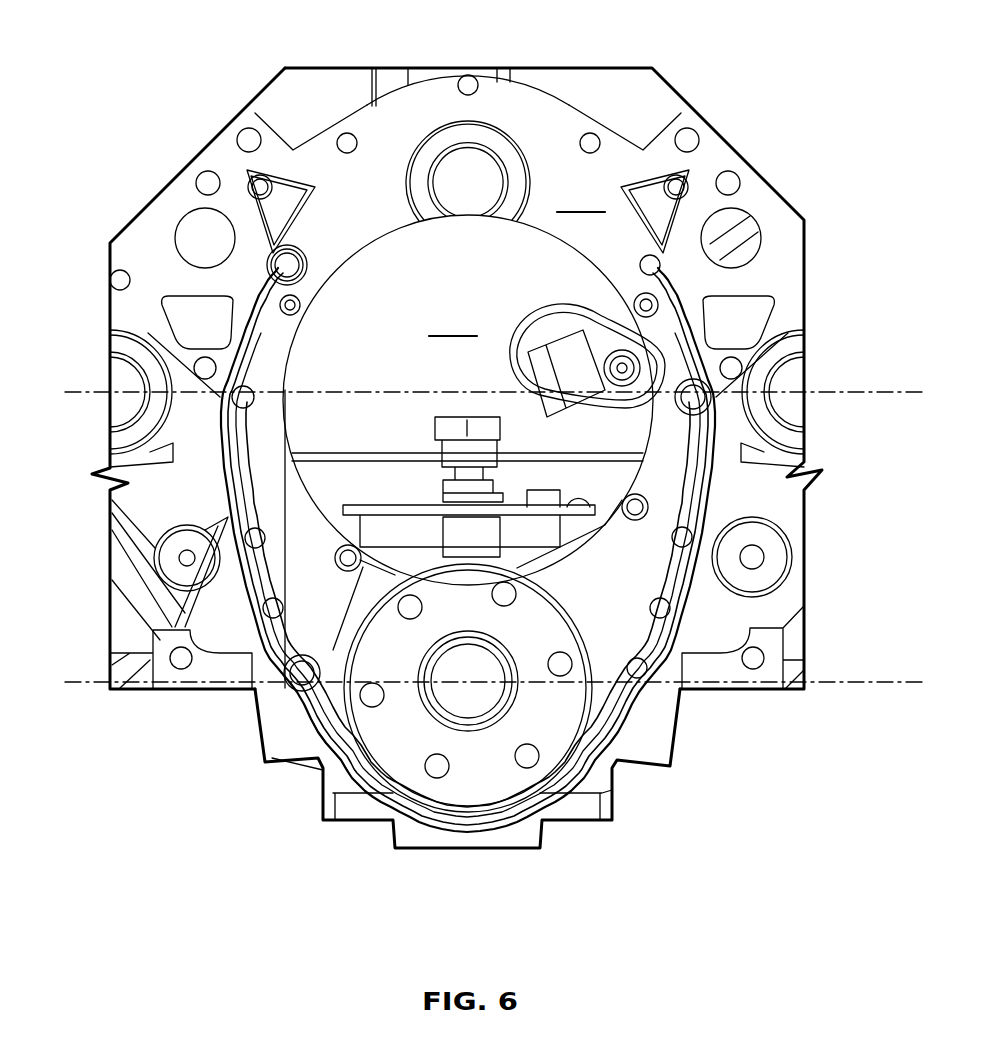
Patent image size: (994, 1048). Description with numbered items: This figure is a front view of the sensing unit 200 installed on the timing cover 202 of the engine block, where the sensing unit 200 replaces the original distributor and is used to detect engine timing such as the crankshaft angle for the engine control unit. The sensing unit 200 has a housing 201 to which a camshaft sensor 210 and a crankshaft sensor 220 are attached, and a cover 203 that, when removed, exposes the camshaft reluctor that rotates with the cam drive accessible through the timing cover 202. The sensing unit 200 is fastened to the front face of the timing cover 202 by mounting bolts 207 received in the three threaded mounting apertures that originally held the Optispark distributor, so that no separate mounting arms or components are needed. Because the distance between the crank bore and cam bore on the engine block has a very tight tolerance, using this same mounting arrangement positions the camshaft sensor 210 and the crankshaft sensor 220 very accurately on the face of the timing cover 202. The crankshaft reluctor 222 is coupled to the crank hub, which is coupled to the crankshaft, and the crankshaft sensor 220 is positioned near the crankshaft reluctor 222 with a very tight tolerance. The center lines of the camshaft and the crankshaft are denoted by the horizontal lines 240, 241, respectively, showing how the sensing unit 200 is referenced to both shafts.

The sensing unit 200 is at (360, 245).
The housing 201 is at (284, 566).
The timing cover 202 is at (457, 381).
The cover 203 is at (468, 400).
The mounting bolts 207 is at (268, 262).
The camshaft sensor 210 is at (590, 351).
The crankshaft sensor 220 is at (493, 481).
The crankshaft reluctor 222 is at (362, 740).
The horizontal line 240 is at (104, 396).
The horizontal line 241 is at (108, 689).